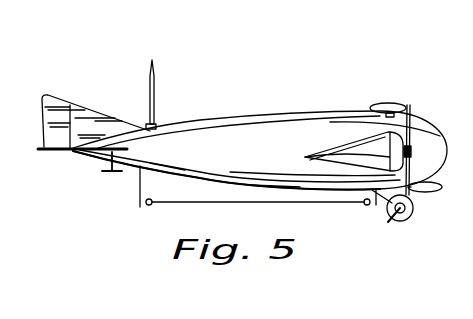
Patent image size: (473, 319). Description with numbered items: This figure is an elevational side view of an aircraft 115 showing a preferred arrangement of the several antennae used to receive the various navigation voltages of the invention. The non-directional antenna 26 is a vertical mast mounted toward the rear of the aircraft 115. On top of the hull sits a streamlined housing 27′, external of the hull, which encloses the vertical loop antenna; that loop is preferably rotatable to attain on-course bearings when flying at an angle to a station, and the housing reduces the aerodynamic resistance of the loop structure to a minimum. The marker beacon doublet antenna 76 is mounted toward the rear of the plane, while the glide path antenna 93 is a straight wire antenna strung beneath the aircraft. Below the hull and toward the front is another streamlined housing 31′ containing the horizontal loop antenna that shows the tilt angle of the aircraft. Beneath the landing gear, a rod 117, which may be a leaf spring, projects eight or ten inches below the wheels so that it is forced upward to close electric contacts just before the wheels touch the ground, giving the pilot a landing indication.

The non-directional antenna 26 is at (154, 80).
The aircraft 115 is at (218, 122).
The streamlined housing 27′ is at (395, 103).
The streamlined housing 31′ is at (427, 192).
The rod 117 is at (391, 225).
The glide path antenna 93 is at (234, 203).
The marker beacon doublet antenna 76 is at (98, 160).